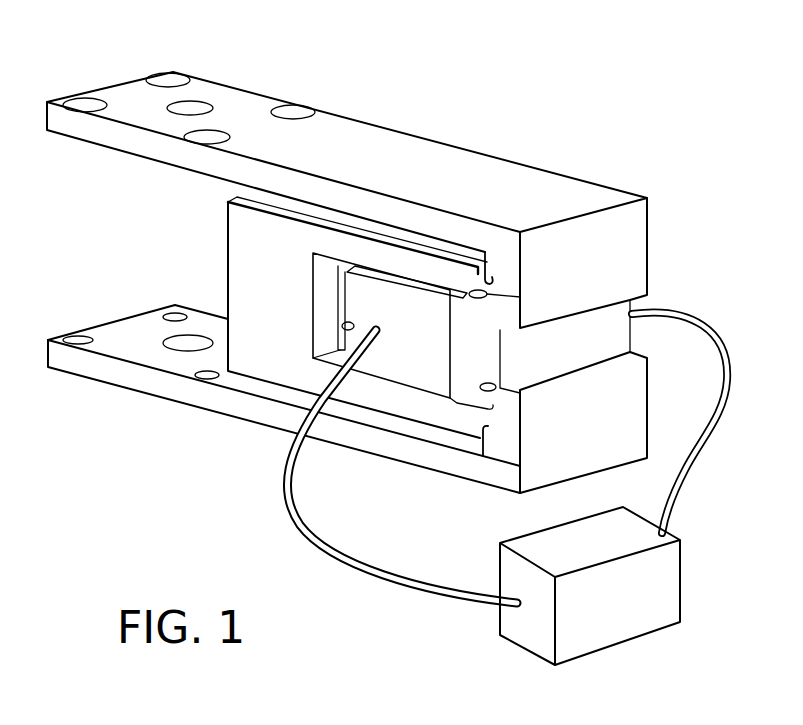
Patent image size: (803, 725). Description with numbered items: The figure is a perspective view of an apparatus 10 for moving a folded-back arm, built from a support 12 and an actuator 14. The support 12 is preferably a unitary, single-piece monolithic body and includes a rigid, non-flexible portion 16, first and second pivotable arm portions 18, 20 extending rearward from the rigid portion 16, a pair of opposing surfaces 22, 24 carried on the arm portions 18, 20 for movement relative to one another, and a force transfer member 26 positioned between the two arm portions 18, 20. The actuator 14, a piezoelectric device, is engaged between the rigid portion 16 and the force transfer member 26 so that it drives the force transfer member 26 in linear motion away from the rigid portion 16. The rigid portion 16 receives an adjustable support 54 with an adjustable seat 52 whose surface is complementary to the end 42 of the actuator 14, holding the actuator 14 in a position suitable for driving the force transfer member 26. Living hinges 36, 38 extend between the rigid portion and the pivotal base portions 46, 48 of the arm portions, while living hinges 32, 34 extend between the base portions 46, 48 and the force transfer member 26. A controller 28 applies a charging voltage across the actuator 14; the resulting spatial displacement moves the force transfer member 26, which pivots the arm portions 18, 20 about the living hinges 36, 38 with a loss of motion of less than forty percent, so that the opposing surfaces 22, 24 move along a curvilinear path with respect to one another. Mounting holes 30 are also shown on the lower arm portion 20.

The apparatus 10 is at (392, 97).
The support 12 is at (322, 214).
The actuator 14 is at (427, 357).
The rigid, non-flexible portion 16 is at (242, 228).
The first pivotable arm portion 18 is at (347, 154).
The second pivotable arm portion 20 is at (284, 375).
The opposing surface 22 is at (76, 141).
The opposing surface 24 is at (124, 330).
The force transfer member 26 is at (614, 325).
The controller 28 is at (593, 640).
The mounting holes 30 is at (242, 353).
The living hinge 32 is at (522, 302).
The living hinge 34 is at (498, 406).
The living hinge 36 is at (470, 300).
The living hinge 38 is at (490, 455).
The end of the actuator 42 is at (343, 292).
The pivotal base portion 46 is at (640, 220).
The pivotal base portion 48 is at (634, 388).
The adjustable seat 52 is at (346, 330).
The adjustable support 54 is at (228, 278).